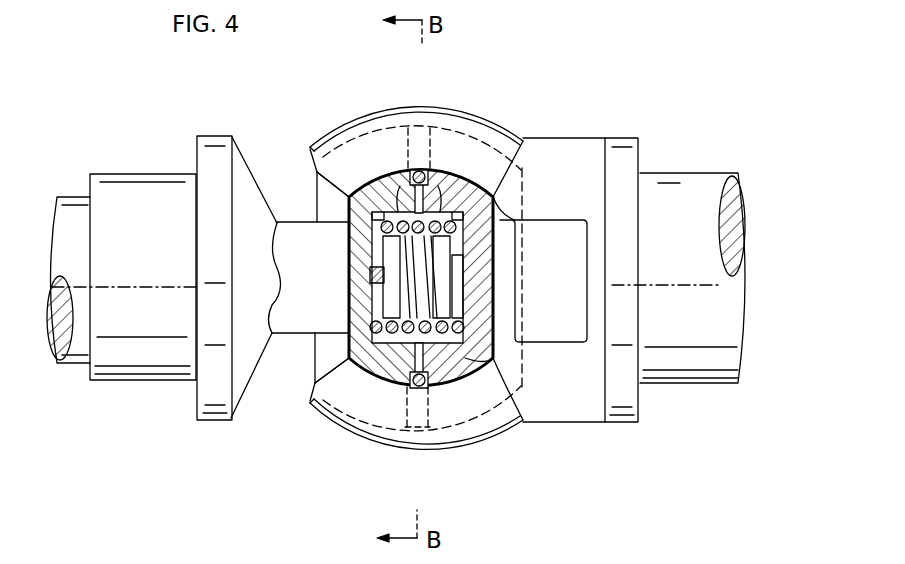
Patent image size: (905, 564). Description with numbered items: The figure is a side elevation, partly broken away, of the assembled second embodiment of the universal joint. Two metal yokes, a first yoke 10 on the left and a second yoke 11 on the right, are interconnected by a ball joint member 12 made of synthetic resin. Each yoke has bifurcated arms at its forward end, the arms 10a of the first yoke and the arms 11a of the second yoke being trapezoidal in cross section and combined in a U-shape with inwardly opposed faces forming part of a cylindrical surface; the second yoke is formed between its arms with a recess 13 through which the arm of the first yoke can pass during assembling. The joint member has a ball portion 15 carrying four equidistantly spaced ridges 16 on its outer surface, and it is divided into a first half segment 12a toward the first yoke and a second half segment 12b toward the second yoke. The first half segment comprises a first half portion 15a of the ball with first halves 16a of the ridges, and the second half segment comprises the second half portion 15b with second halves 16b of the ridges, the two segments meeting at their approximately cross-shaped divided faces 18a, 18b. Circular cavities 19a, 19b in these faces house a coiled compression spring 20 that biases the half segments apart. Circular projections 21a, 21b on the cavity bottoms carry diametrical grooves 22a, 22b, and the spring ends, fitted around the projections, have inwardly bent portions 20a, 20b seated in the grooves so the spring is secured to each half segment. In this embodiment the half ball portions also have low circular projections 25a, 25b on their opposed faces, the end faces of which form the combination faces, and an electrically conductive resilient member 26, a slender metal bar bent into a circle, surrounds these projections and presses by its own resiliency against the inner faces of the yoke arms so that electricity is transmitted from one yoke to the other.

The first yoke 10 is at (78, 365).
The bifurcated arms of first yoke 10a is at (276, 220).
The second yoke 11 is at (688, 385).
The bifurcated arms of second yoke 11a is at (460, 106).
The ball joint member 12 is at (370, 164).
The first joint member half segment 12a is at (352, 378).
The second joint member half segment 12b is at (478, 388).
The recess 13 is at (600, 236).
The ball portion 15 is at (348, 168).
The first half portion 15a is at (367, 392).
The second half portion 15b is at (462, 400).
The ridges 16 is at (303, 180).
The first halves of ridges 16a is at (312, 177).
The second halves of ridges 16b is at (525, 222).
The divided face of first half segment 18a is at (447, 173).
The divided face of second half segment 18b is at (400, 172).
The circular cavity of first half segment 19a is at (290, 233).
The circular cavity of second half segment 19b is at (492, 178).
The coiled compression spring 20 is at (500, 383).
The bent portion of spring 20a is at (370, 276).
The bent portion of spring 20b is at (463, 272).
The circular projection 21a is at (385, 300).
The circular projection 21b is at (440, 296).
The diametrical groove 22a is at (380, 250).
The diametrical groove 22b is at (470, 222).
The circular projection of small height 25a is at (438, 405).
The circular projection of small height 25b is at (398, 400).
The electrically conductive resilient member 26 is at (422, 166).